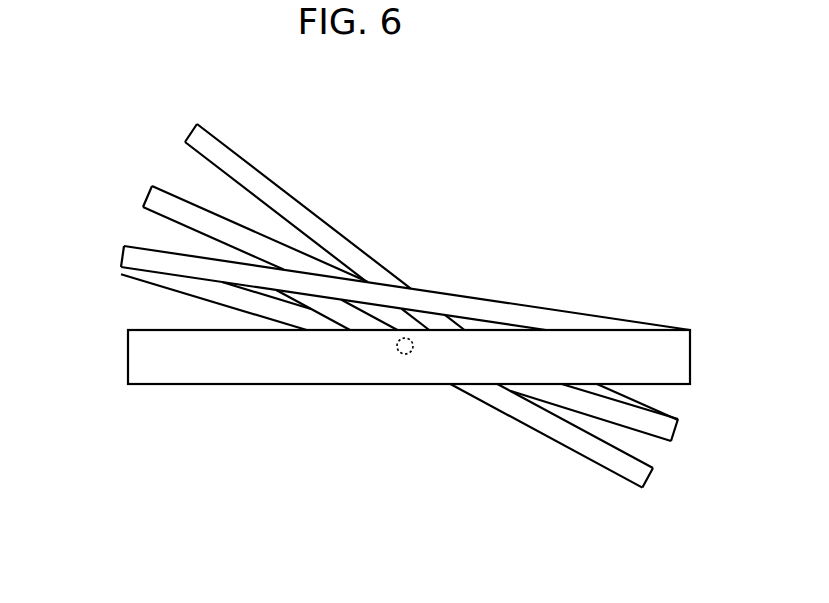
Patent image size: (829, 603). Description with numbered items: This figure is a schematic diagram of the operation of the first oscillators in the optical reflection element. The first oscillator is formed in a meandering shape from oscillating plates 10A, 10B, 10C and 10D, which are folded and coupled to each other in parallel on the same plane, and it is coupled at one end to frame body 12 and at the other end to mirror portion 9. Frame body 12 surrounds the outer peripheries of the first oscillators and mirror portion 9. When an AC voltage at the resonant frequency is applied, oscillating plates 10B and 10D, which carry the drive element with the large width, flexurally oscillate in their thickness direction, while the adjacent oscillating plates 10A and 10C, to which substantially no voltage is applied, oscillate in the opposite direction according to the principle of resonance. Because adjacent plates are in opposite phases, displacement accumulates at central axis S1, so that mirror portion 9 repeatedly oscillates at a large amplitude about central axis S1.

The mirror portion 9 is at (195, 135).
The oscillating plate 10A is at (638, 477).
The oscillating plate 10B is at (153, 200).
The oscillating plate 10C is at (663, 428).
The oscillating plate 10D is at (137, 262).
The frame body 12 is at (137, 368).
The central axis S1 is at (404, 358).